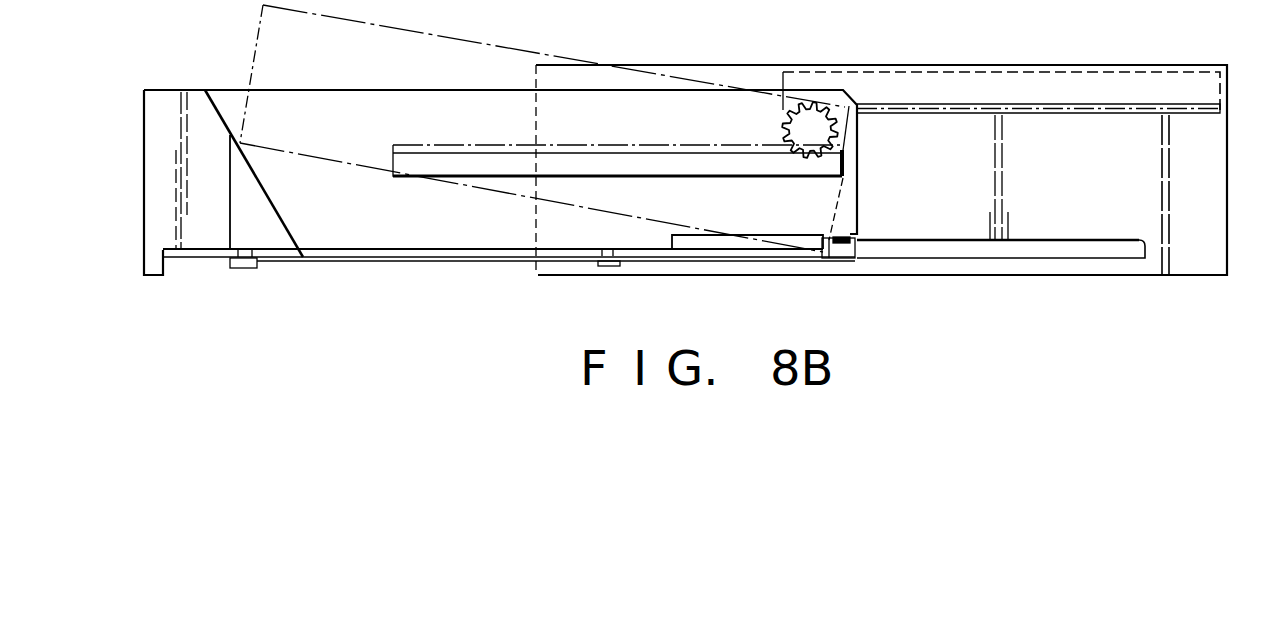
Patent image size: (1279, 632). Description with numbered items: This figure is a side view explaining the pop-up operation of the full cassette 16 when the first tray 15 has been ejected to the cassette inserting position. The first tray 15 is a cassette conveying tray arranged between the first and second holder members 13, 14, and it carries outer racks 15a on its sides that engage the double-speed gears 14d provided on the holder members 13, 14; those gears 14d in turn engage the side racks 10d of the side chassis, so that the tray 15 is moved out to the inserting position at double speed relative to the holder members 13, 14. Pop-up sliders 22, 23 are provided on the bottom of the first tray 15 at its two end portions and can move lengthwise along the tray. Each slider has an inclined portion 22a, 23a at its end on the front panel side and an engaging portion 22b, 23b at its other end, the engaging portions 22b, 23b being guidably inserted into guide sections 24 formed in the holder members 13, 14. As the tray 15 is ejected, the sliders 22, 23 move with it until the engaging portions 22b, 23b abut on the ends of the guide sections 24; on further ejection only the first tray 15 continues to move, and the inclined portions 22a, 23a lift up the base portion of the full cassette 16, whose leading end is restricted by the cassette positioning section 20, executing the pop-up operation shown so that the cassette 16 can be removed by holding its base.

The side rack 10d is at (1087, 85).
The full cassette 16 is at (493, 45).
The first tray 15 is at (198, 252).
The outer rack 15a is at (632, 153).
The double-speed gear 14d is at (812, 104).
The pop-up slider 22 is at (562, 275).
The pop-up slider 23 is at (480, 262).
The inclined portion 22a is at (305, 279).
The inclined portion 23a is at (281, 244).
The engaging portion 22b is at (892, 276).
The engaging portion 23b is at (840, 262).
The cassette positioning section 20 is at (858, 238).
The guide section 24 is at (1098, 252).
The first holder member 13 is at (1213, 215).
The second holder member 14 is at (1168, 276).